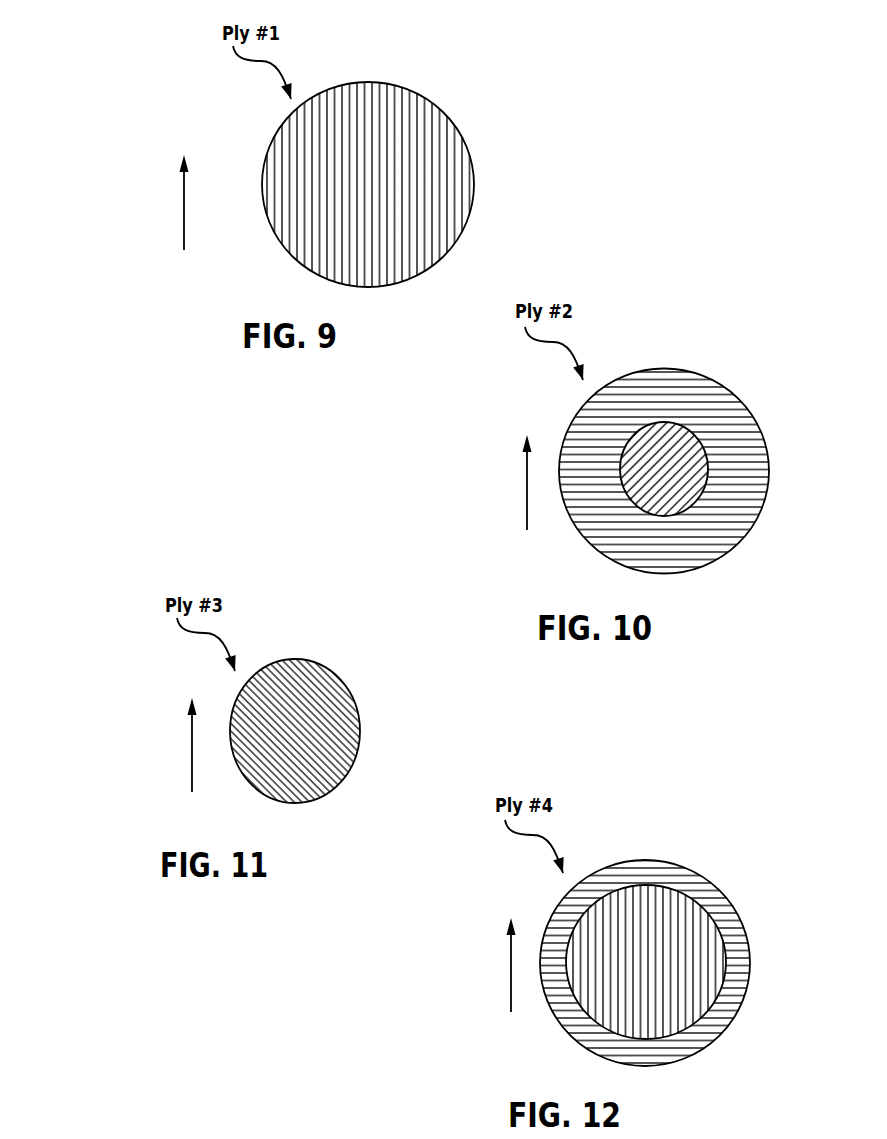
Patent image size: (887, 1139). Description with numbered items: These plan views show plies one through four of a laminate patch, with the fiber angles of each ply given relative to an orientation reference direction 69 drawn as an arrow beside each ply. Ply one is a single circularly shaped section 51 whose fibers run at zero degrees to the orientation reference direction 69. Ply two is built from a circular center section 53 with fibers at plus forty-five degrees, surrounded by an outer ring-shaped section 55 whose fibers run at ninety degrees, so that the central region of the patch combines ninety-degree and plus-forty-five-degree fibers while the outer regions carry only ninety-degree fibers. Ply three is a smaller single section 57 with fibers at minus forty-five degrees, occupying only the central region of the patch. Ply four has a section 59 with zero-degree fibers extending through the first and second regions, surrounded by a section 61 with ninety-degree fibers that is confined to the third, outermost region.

In FIG. 9, the circularly shaped section 51 is at (430, 162).
In FIG. 10, the circular center section 53 is at (680, 467).
In FIG. 10, the outer portion of second ply with fibers at 90 degrees 55 is at (718, 413).
In FIG. 11, the single section 57 is at (337, 702).
In FIG. 12, the section 59 is at (680, 978).
In FIG. 12, the section 61 is at (727, 927).
In FIG. 9, the orientation reference direction 69 is at (186, 211).
In FIG. 10, the orientation reference direction 69 is at (529, 505).
In FIG. 11, the orientation reference direction 69 is at (193, 780).
In FIG. 12, the orientation reference direction 69 is at (512, 988).